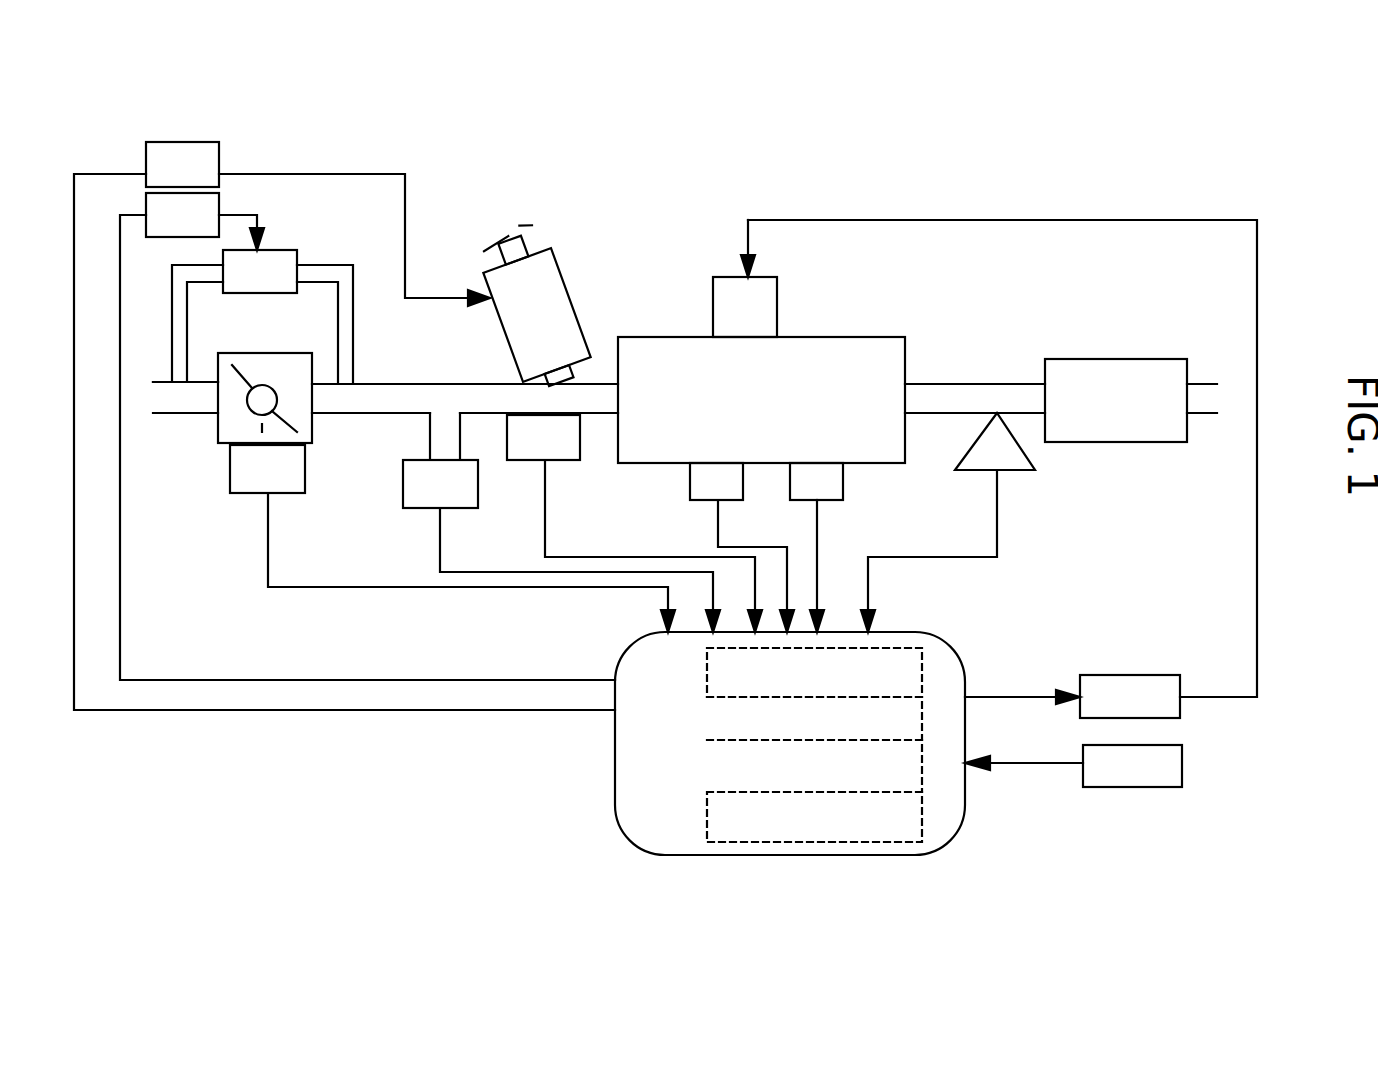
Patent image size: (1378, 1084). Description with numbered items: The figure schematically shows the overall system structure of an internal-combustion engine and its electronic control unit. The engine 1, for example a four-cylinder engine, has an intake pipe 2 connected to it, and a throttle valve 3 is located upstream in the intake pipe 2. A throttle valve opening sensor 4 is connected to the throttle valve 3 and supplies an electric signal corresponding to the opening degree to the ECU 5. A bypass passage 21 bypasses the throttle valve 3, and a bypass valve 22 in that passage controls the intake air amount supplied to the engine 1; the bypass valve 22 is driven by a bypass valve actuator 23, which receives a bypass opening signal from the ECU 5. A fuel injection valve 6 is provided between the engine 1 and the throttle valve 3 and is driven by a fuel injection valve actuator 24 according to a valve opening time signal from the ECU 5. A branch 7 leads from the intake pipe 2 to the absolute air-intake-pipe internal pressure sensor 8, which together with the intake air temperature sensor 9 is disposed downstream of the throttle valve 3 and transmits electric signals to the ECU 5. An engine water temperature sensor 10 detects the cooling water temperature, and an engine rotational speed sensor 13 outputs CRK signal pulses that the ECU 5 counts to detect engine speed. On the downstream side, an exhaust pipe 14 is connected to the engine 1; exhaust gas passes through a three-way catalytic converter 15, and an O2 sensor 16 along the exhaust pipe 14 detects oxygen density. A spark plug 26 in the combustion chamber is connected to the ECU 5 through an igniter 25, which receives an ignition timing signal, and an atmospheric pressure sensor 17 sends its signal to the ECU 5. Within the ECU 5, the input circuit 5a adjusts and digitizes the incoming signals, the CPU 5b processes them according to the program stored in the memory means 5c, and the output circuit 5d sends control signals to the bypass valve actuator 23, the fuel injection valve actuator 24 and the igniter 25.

The engine 1 is at (873, 337).
The intake pipe 2 is at (433, 383).
The throttle valve 3 is at (245, 370).
The throttle valve opening sensor 4 is at (270, 493).
The electronic control unit 5 is at (673, 855).
The input circuit 5a is at (922, 668).
The CPU 5b is at (922, 718).
The memory means 5c is at (922, 765).
The output circuit 5d is at (922, 812).
The fuel injection valve 6 is at (568, 283).
The pipe 7 is at (425, 432).
The absolute air-intake-pipe internal pressure sensor 8 is at (420, 508).
The intake air temperature sensor 9 is at (560, 462).
The engine water temperature sensor 10 is at (690, 480).
The engine rotational speed sensor 13 is at (837, 500).
The exhaust pipe 14 is at (932, 385).
The three-way catalytic converter 15 is at (1065, 359).
The O2 sensor 16 is at (1010, 472).
The atmospheric pressure sensor 17 is at (1182, 763).
The bypass passage 21 is at (354, 313).
The bypass valve 22 is at (283, 250).
The bypass valve actuator 23 is at (220, 204).
The fuel injection valve actuator 24 is at (199, 142).
The igniter 25 is at (1138, 675).
The spark plug 26 is at (713, 300).